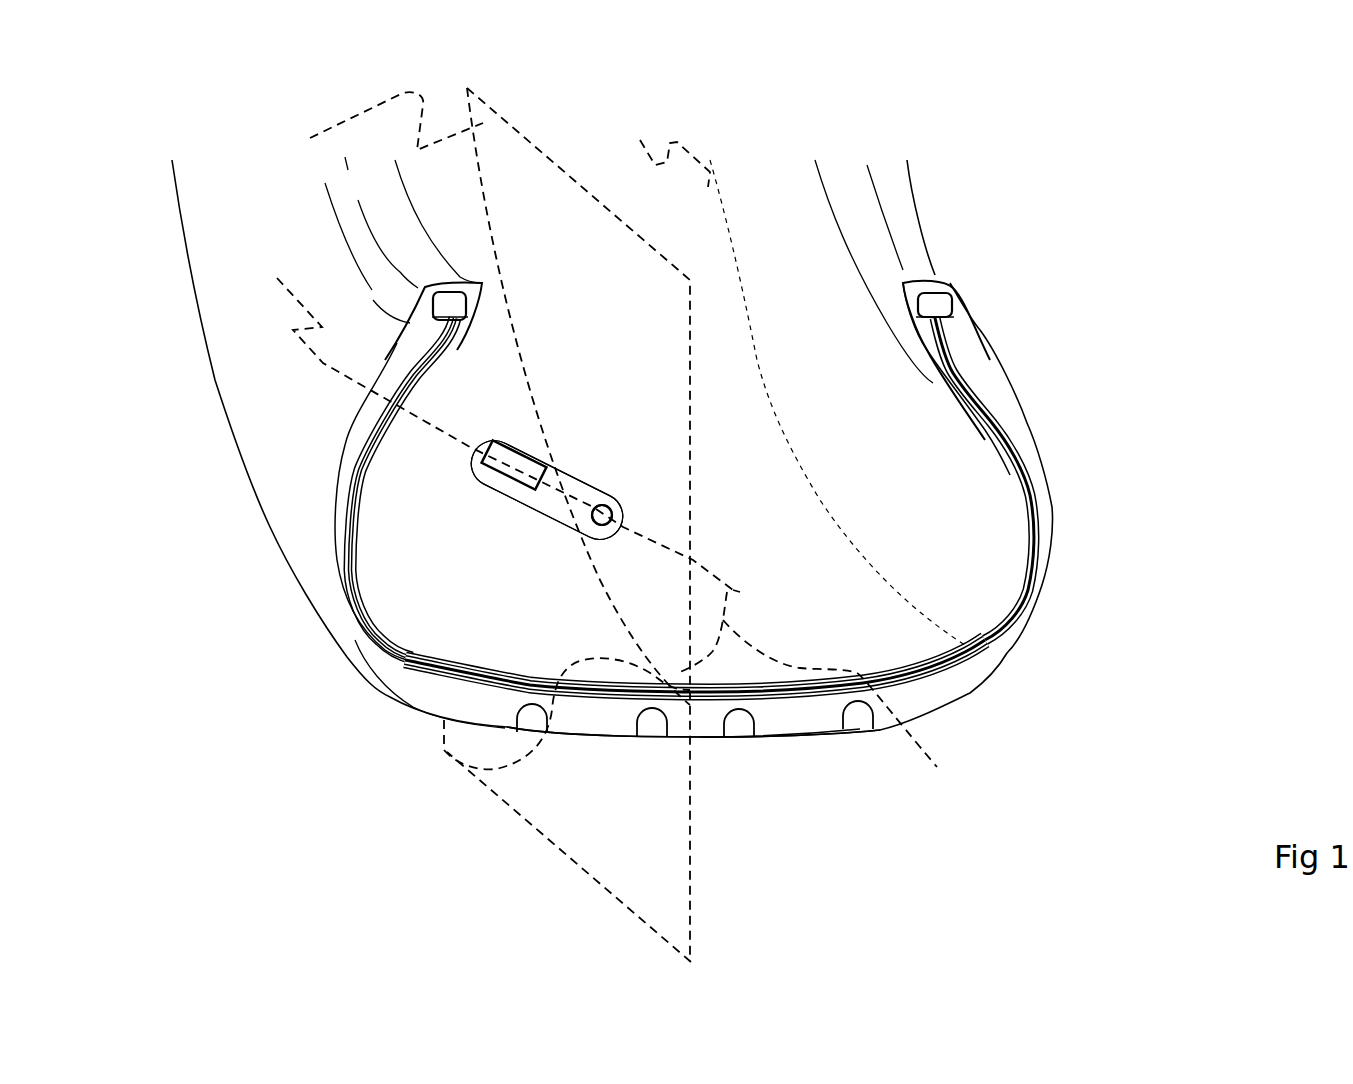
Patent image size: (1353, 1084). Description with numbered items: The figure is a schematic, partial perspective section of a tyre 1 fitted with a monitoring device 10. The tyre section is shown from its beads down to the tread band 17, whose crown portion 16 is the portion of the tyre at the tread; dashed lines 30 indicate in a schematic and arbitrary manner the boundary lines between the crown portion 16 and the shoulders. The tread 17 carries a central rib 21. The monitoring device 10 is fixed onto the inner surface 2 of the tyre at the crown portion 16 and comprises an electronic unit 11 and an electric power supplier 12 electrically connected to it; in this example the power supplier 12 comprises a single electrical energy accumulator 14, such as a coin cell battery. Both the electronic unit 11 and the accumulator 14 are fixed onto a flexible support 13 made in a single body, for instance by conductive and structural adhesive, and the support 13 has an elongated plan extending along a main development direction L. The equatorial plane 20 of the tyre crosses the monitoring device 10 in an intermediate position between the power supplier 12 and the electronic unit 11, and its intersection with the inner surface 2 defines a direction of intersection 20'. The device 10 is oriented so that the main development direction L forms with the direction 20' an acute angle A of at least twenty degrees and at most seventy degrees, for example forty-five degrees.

The tyre 1 is at (1176, 141).
The inner surface 2 is at (845, 645).
The monitoring device 10 is at (595, 455).
The electronic unit 11 is at (494, 482).
The electric power supplier 12 is at (620, 500).
The flexible support 13 is at (470, 457).
The electrical energy accumulator 14 is at (622, 510).
The crown portion 16 is at (655, 769).
The tread band 17 is at (590, 728).
The equatorial plane 20 is at (375, 126).
The direction of intersection 20' is at (531, 727).
The central rib 21 is at (700, 727).
The dashed lines 30 is at (786, 374).
The main development direction L is at (493, 416).
The acute angle A is at (817, 702).